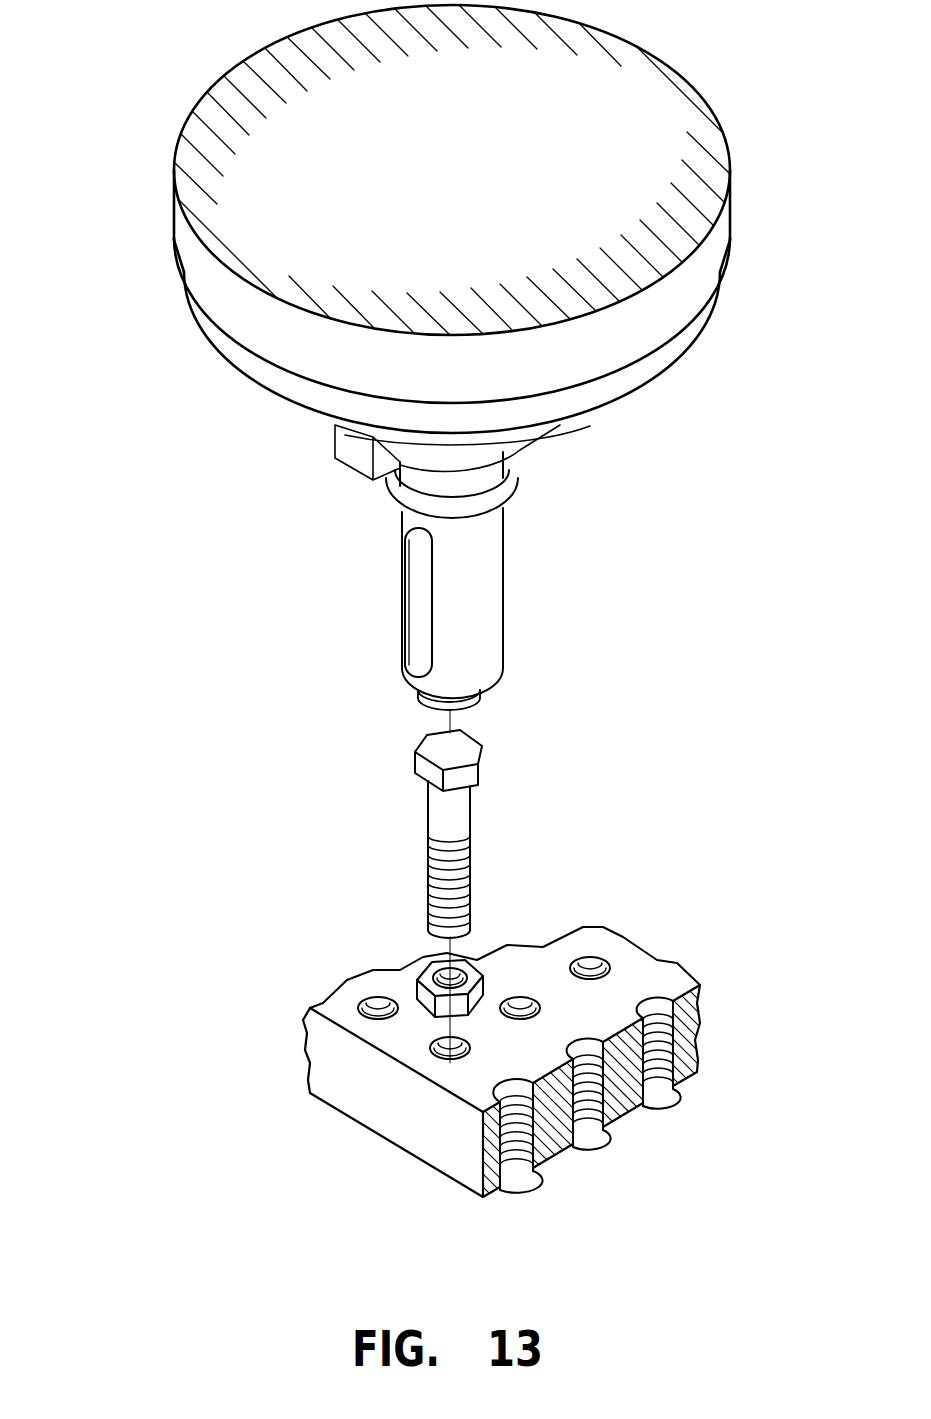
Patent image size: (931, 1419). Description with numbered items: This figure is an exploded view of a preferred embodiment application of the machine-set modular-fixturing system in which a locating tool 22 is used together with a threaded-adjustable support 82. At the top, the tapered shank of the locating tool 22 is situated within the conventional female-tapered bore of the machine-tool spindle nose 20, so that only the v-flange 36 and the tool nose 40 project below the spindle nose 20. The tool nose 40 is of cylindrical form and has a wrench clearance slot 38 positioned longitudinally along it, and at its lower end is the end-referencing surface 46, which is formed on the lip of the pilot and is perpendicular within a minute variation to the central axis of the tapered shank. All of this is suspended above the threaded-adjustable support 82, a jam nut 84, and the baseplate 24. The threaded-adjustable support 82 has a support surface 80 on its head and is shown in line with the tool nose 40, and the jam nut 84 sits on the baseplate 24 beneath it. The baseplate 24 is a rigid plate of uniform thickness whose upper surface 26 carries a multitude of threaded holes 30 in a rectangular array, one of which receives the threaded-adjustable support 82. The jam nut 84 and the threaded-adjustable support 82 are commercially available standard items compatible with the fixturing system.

The machine-tool spindle nose 20 is at (401, 261).
The locating tool 22 is at (471, 631).
The baseplate 24 is at (587, 1036).
The top surface of block 26 is at (693, 972).
The threaded holes 30 is at (597, 957).
The v-flange 36 is at (495, 475).
The wrench clearance slot 38 is at (420, 665).
The tool nose 40 is at (490, 655).
The end-referencing surface 46 is at (460, 708).
The support surface 80 is at (462, 753).
The threaded-adjustable support 82 is at (496, 834).
The jam nut 84 is at (423, 958).